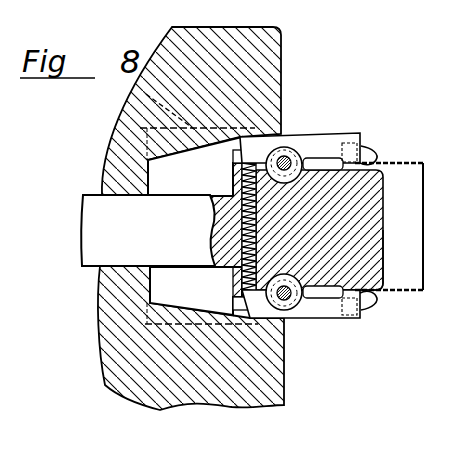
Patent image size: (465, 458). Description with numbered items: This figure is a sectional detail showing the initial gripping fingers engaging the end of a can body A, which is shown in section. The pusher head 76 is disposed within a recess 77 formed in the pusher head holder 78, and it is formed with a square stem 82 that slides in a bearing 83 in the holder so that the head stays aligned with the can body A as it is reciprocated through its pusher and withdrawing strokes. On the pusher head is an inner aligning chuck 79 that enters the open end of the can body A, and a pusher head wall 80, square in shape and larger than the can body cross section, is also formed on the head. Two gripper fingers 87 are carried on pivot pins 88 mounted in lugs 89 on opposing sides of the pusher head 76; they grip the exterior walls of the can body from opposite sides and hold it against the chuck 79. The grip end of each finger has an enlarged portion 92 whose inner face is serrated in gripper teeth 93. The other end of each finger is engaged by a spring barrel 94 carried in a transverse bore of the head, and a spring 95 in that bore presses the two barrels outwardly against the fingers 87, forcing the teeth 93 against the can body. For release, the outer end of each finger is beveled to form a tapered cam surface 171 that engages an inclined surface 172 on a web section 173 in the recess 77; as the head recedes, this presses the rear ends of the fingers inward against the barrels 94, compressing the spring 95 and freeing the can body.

The pusher head 76 is at (328, 199).
The recess 77 is at (144, 93).
The pusher head holder 78 is at (262, 51).
The aligning chuck 79 is at (352, 248).
The pusher head wall 80 is at (350, 318).
The square stem 82 is at (148, 230).
The bearing 83 is at (130, 195).
The gripper fingers 87 is at (300, 225).
The pivot pins 88 is at (287, 160).
The lugs 89 is at (267, 172).
The enlarged portion 92 is at (366, 162).
The gripper teeth 93 is at (371, 152).
The spring barrel 94 is at (238, 164).
The spring 95 is at (241, 178).
The tapered cam surface 171 is at (246, 134).
The inclined surface 172 is at (198, 148).
The web section 173 is at (175, 138).
The can body A is at (412, 162).